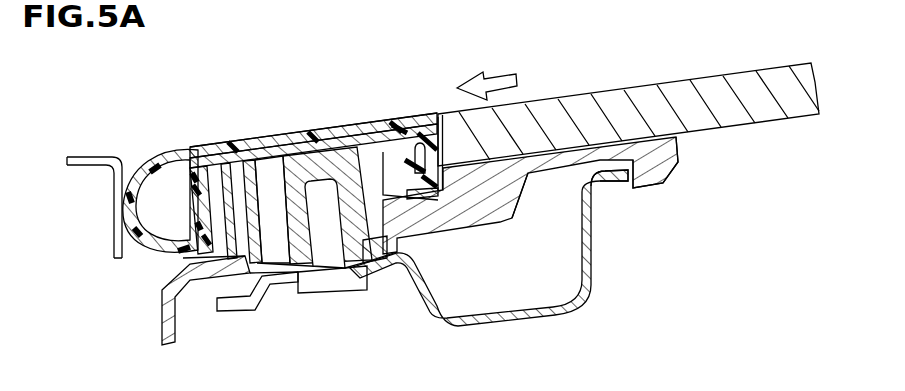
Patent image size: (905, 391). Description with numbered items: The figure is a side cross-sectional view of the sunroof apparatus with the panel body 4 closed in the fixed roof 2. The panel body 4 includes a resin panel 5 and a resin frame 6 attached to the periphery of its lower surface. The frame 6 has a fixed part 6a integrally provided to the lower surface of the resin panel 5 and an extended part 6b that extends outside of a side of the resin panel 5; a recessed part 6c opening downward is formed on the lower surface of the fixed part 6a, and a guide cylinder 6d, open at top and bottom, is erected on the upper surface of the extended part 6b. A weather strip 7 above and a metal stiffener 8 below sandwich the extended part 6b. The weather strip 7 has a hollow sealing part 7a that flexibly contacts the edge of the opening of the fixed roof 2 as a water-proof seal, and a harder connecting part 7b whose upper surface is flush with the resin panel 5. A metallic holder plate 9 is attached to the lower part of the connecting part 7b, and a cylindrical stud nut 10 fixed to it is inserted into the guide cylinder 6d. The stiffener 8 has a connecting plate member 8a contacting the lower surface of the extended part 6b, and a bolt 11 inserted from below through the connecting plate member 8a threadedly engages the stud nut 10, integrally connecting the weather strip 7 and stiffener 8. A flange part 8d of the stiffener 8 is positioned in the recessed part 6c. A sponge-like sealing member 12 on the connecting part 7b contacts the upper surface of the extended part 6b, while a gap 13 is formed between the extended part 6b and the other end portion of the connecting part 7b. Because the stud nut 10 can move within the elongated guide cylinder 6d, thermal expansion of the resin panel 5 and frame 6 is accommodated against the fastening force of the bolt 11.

The fixed roof 2 is at (90, 161).
The panel body 4 is at (279, 108).
The resin panel 5 is at (648, 96).
The frame 6 is at (685, 190).
The fixed part 6a is at (650, 165).
The extended part 6b is at (212, 268).
The recessed part 6c is at (530, 177).
The guide cylinder 6d is at (386, 128).
The weather strip 7 is at (280, 161).
The sealing part 7a is at (163, 166).
The connecting part 7b is at (249, 146).
The stiffener 8 is at (424, 338).
The connecting plate member 8a is at (273, 277).
The flange part 8d is at (613, 178).
The holder plate 9 is at (312, 128).
The stud nut 10 is at (347, 128).
The bolt 11 is at (330, 284).
The sealing member 12 is at (437, 220).
The gap 13 is at (163, 270).